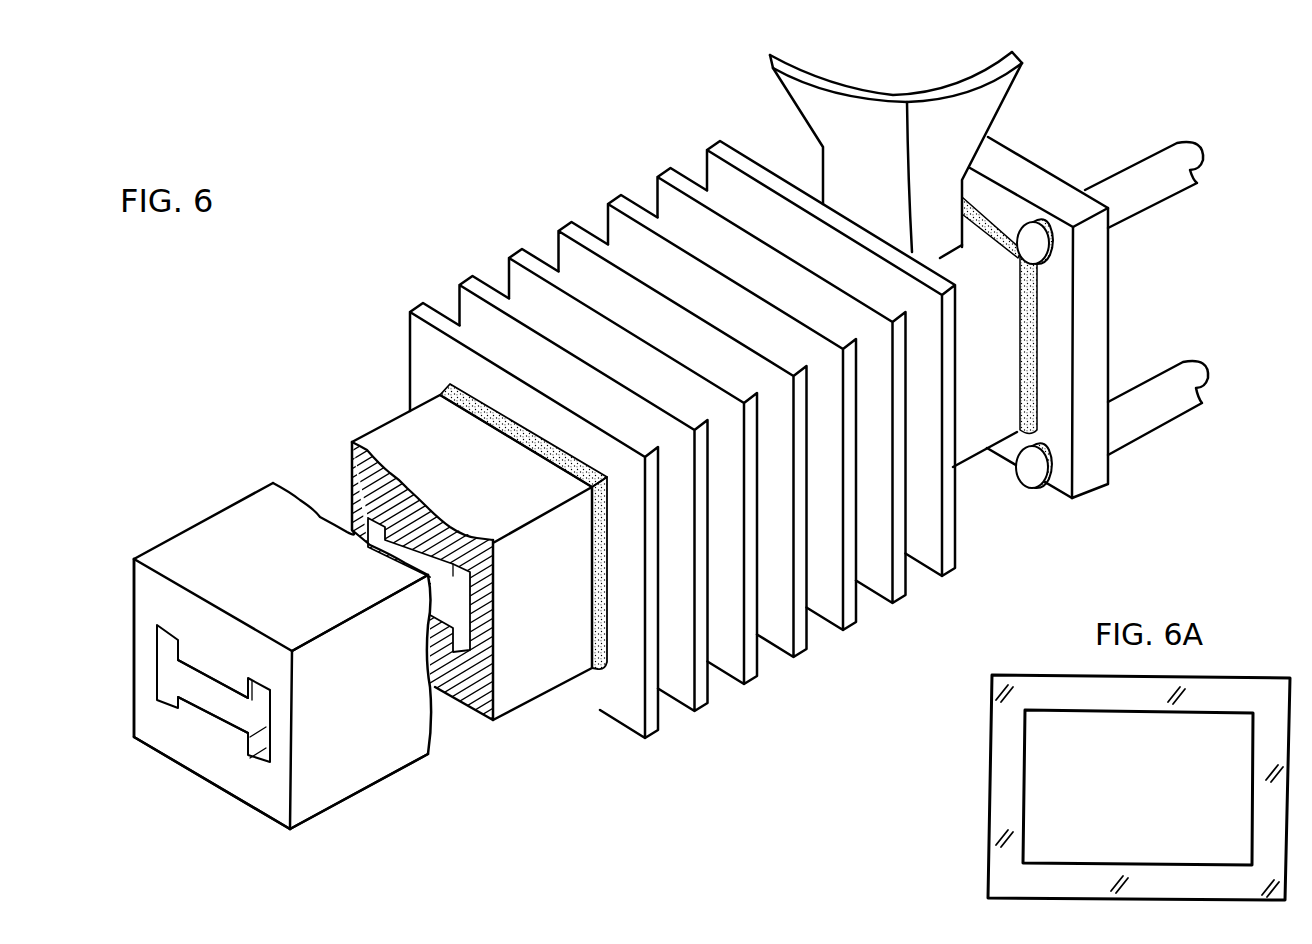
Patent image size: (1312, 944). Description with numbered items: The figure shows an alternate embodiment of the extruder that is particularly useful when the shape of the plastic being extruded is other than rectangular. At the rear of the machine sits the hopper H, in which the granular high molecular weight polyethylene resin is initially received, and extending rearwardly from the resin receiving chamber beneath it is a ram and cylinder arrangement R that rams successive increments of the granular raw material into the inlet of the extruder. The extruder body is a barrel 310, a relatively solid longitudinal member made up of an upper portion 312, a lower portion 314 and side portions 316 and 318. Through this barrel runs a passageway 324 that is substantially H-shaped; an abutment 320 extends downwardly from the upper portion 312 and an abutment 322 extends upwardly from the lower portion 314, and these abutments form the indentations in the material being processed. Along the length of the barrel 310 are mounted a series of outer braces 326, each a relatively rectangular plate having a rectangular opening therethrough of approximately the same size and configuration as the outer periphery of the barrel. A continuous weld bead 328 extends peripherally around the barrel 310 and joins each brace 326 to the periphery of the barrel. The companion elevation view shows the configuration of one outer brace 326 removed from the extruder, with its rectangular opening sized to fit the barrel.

In FIG. 6, the barrel 310 is at (196, 521).
In FIG. 6, the upper portion 312 is at (180, 616).
In FIG. 6, the lower portion 314 is at (180, 750).
In FIG. 6, the side portion 316 is at (282, 736).
In FIG. 6, the side portion 318 is at (147, 655).
In FIG. 6, the abutment 320 is at (210, 664).
In FIG. 6, the abutment 322 is at (212, 717).
In FIG. 6, the passageway 324 is at (222, 700).
In FIG. 6, the outer brace 326 is at (627, 718).
In FIG. 6A, the outer brace 326 is at (1002, 793).
In FIG. 6, the weld bead 328 is at (487, 403).
In FIG. 6, the hopper H is at (993, 124).
In FIG. 6, the ram and cylinder arrangement R is at (1040, 185).